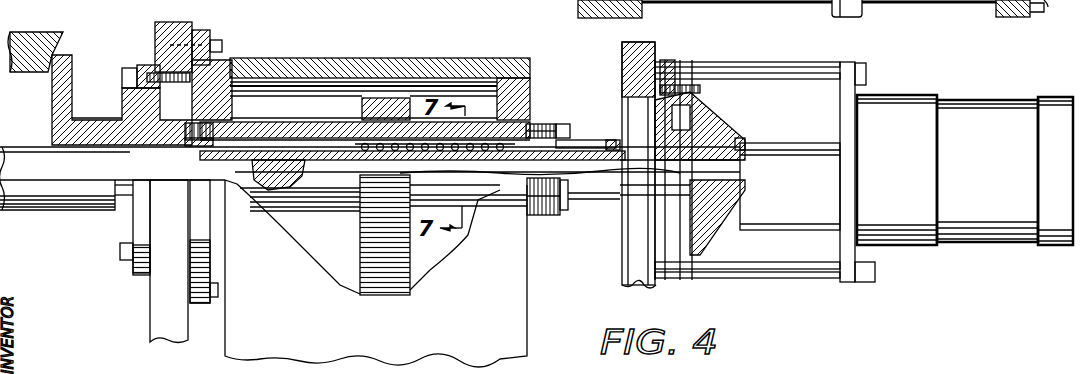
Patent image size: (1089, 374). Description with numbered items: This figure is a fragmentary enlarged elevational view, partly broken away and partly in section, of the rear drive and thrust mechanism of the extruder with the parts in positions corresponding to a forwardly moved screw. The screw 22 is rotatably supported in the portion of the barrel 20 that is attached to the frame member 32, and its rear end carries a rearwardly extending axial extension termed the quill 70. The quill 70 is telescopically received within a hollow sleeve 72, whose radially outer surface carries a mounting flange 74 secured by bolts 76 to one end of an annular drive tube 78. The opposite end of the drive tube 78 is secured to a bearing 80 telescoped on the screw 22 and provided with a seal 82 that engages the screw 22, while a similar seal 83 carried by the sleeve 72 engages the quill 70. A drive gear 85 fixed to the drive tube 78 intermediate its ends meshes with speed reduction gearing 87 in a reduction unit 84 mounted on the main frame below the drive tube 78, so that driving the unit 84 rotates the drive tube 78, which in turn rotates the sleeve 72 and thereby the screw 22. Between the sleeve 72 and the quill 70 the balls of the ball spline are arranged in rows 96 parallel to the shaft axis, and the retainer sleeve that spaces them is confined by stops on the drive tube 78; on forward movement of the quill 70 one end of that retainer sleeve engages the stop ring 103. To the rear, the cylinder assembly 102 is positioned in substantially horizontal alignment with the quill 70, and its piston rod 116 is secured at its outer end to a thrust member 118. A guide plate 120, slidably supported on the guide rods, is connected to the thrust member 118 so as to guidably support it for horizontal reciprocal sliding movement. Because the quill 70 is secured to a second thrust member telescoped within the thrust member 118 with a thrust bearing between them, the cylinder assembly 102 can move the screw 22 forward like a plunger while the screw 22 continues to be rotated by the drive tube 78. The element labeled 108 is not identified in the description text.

The barrel 20 is at (90, 118).
The screw 22 is at (8, 210).
The frame member 32 is at (176, 28).
The quill 70 is at (592, 202).
The hollow sleeve 72 is at (592, 140).
The mounting flange 74 is at (545, 124).
The bolts 76 is at (568, 124).
The drive tube 78 is at (290, 128).
The bearing 80 is at (200, 141).
The seal 82 is at (188, 143).
The seal 83 is at (611, 152).
The reduction unit 84 is at (552, 310).
The drive gear 85 is at (363, 114).
The speed reduction gearing 87 is at (411, 262).
The rows of balls 96 is at (466, 137).
The cylinder assembly 102 is at (994, 88).
The stop ring 103 is at (352, 160).
The plate 108 is at (648, 290).
The piston rod 116 is at (790, 186).
The thrust member 118 is at (718, 113).
The guide plate 120 is at (855, 12).